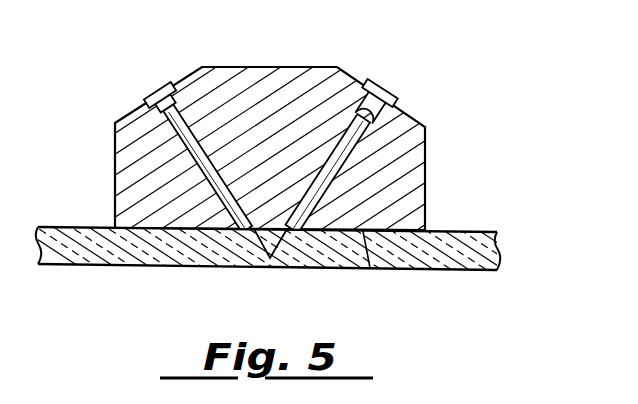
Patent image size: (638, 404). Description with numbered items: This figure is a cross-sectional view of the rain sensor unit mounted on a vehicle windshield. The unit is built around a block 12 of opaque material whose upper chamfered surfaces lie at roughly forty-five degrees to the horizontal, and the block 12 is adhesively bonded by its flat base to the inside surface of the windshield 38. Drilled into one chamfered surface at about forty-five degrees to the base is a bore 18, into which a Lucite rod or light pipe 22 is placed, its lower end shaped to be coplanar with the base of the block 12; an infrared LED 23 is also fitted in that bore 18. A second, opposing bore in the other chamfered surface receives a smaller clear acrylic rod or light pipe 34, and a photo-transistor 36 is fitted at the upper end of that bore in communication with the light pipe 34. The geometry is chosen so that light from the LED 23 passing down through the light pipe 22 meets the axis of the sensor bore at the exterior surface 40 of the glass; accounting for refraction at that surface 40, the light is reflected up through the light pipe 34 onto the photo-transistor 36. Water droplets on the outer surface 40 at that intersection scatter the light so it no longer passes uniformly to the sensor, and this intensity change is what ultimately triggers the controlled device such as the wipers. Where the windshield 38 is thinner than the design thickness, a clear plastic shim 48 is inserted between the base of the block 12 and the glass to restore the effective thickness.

The block 12 is at (243, 67).
The bore 18 is at (397, 146).
The light pipe 22 is at (338, 177).
The LED 23 is at (384, 84).
The acrylic light pipe 34 is at (152, 145).
The photo-transistor 36 is at (158, 87).
The windshield 38 is at (472, 272).
The exterior surface 40 is at (266, 270).
The shim 48 is at (370, 268).